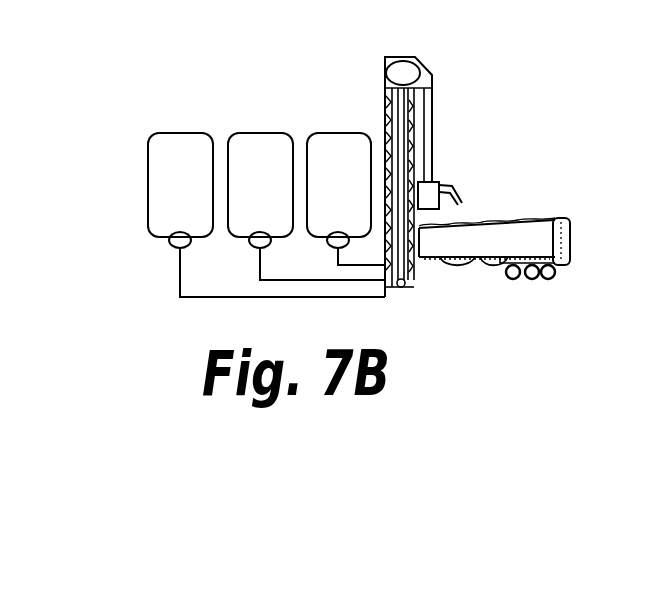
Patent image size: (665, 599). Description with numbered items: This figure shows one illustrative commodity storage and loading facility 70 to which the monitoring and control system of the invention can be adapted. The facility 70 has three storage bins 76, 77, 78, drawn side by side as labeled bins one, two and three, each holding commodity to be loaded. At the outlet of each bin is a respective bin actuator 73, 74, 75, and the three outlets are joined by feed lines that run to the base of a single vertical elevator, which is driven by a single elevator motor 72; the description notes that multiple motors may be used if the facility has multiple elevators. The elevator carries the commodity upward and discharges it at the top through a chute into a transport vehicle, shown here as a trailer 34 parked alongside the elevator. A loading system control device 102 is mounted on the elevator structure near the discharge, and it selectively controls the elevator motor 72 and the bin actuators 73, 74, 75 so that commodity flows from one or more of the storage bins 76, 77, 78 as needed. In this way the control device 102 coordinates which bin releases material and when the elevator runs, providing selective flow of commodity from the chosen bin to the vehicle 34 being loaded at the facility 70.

The facility 70 is at (128, 136).
The elevator motor 72 is at (420, 68).
The bin actuator 73 is at (174, 248).
The bin actuator 74 is at (252, 248).
The bin actuator 75 is at (332, 248).
The storage bin 76 is at (180, 133).
The storage bin 77 is at (260, 133).
The storage bin 78 is at (338, 133).
The control device 102 is at (442, 186).
The truck trailer 34 is at (572, 233).